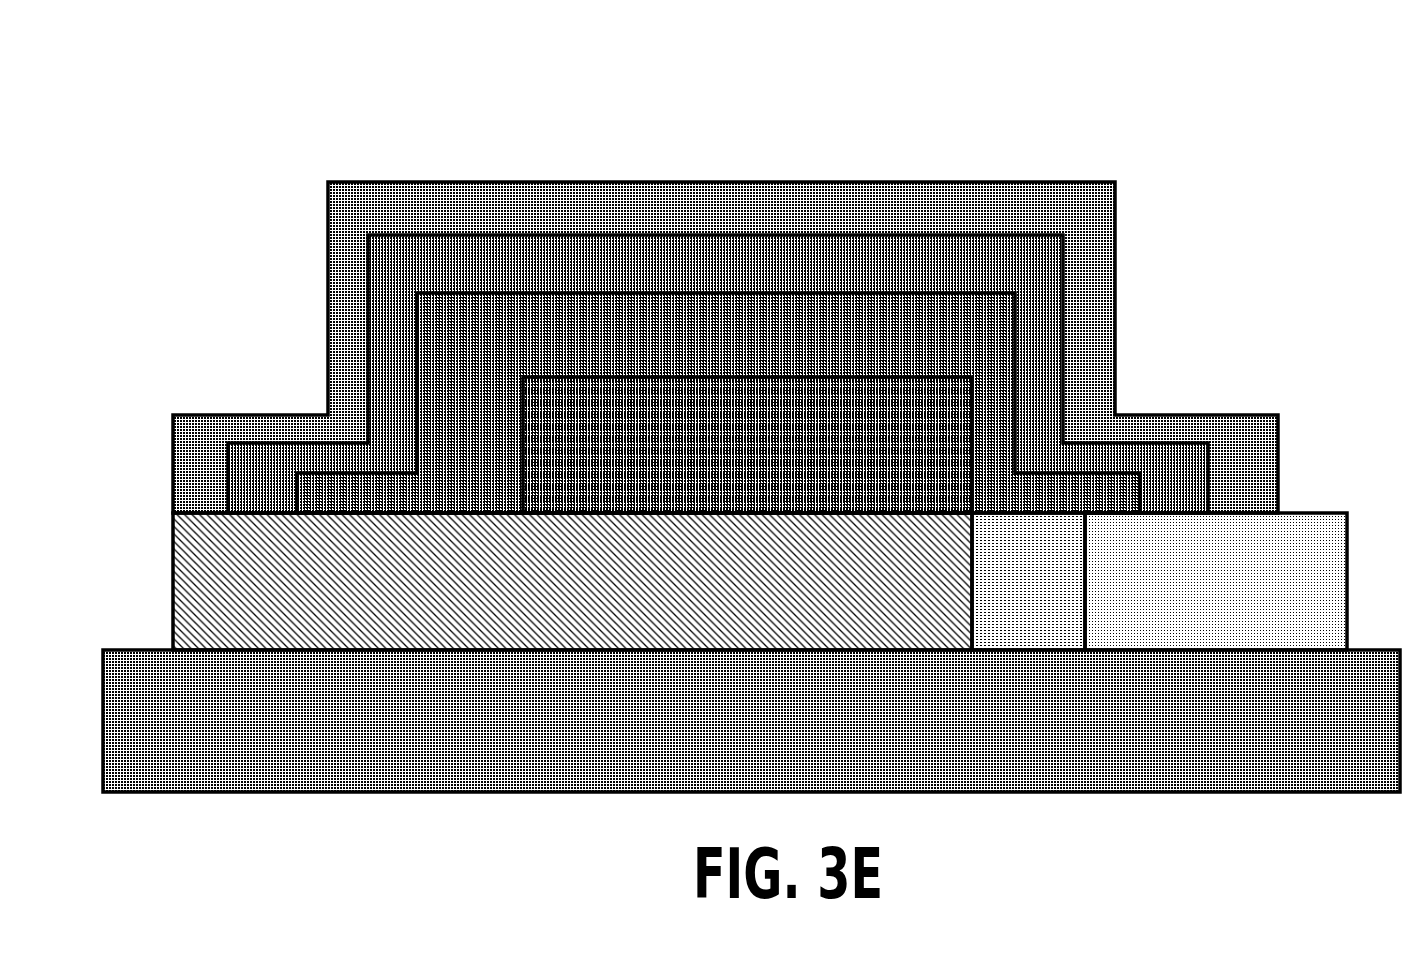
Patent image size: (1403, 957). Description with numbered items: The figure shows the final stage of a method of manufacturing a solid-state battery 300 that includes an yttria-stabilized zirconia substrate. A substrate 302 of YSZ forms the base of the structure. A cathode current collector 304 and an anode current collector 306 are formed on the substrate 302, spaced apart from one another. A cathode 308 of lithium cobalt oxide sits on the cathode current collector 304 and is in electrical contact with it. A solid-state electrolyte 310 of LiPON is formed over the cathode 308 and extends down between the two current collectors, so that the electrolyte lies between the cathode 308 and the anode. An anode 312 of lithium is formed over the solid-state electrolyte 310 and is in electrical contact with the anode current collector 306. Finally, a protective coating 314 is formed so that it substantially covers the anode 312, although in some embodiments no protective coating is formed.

The semiconductor device structure 300 is at (256, 93).
The substrate 302 is at (723, 739).
The cathode current collector 304 is at (543, 601).
The anode current collector 306 is at (1185, 601).
The cathode 308 is at (718, 462).
The solid-state electrolyte 310 is at (690, 352).
The anode 312 is at (518, 285).
The protective coating 314 is at (795, 228).